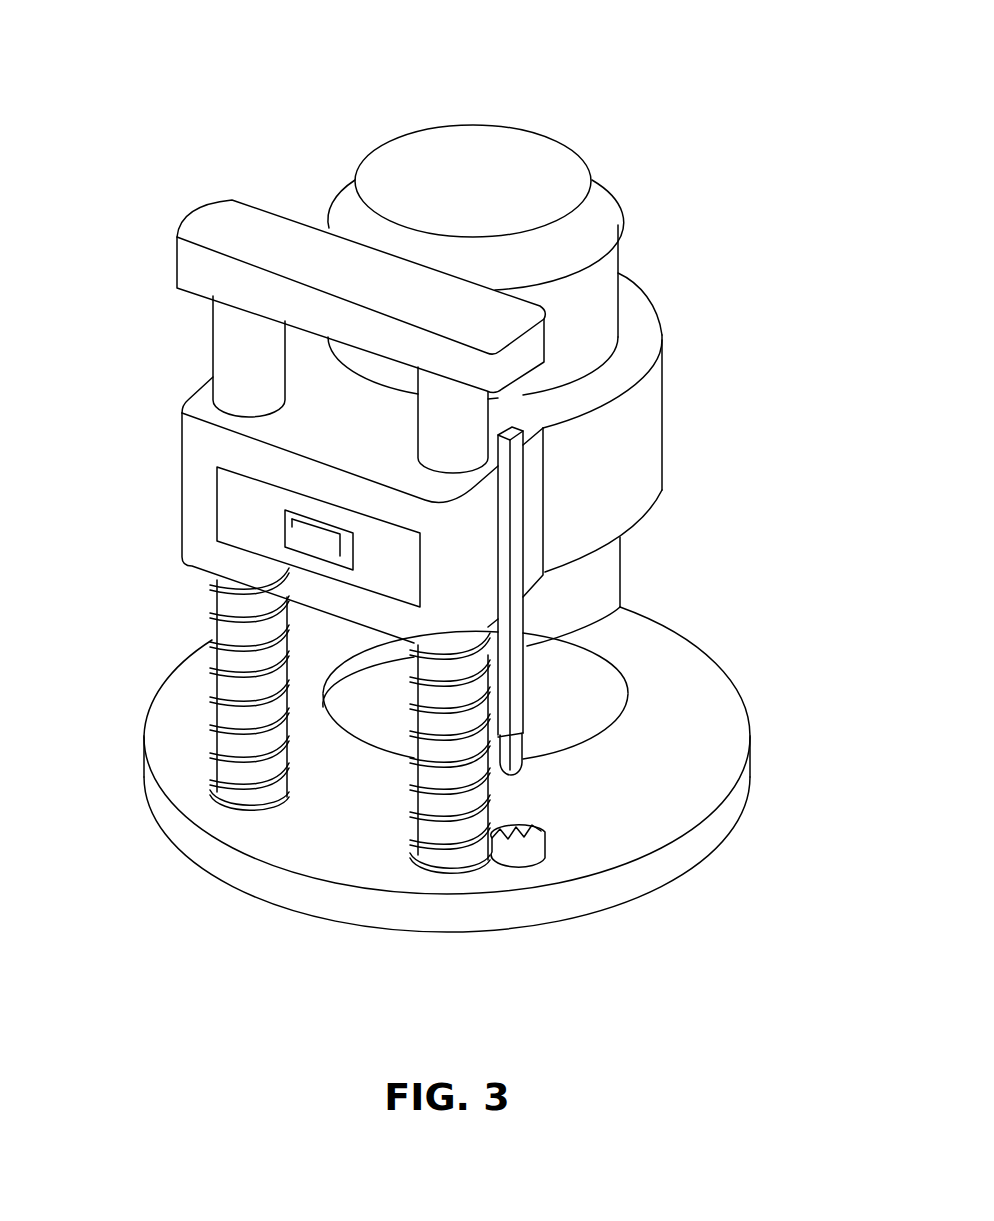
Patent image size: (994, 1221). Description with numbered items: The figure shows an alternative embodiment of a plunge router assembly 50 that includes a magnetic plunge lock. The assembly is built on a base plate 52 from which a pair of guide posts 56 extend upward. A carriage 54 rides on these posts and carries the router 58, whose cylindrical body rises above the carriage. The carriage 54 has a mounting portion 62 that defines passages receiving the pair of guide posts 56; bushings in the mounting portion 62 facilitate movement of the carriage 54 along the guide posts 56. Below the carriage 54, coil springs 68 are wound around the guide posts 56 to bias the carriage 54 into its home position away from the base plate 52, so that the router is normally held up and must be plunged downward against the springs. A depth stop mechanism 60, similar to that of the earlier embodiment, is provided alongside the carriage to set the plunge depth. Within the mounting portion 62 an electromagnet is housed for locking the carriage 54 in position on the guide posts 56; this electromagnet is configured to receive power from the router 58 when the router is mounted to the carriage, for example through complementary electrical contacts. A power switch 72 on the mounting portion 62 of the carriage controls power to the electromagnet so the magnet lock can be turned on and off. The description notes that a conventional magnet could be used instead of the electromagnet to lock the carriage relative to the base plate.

The plunge router assembly 50 is at (442, 494).
The base plate 52 is at (713, 825).
The carriage 54 is at (681, 408).
The guide posts 56 is at (213, 733).
The router 58 is at (531, 154).
The depth stop mechanism 60 is at (580, 727).
The mounting portion 62 is at (294, 510).
The coil springs 68 is at (213, 640).
The power switch 72 is at (255, 533).